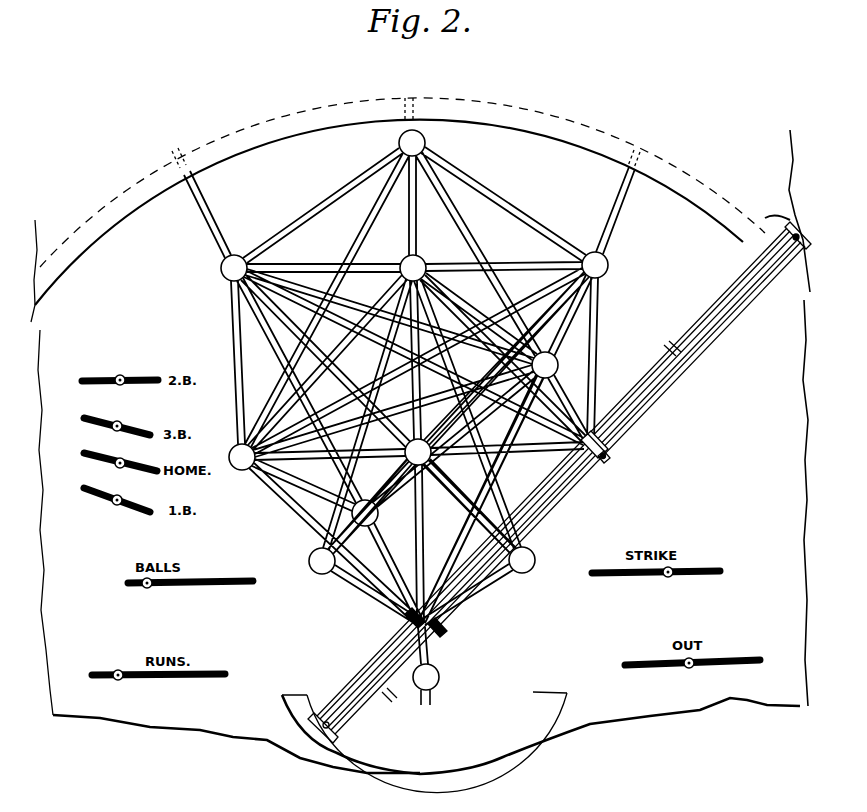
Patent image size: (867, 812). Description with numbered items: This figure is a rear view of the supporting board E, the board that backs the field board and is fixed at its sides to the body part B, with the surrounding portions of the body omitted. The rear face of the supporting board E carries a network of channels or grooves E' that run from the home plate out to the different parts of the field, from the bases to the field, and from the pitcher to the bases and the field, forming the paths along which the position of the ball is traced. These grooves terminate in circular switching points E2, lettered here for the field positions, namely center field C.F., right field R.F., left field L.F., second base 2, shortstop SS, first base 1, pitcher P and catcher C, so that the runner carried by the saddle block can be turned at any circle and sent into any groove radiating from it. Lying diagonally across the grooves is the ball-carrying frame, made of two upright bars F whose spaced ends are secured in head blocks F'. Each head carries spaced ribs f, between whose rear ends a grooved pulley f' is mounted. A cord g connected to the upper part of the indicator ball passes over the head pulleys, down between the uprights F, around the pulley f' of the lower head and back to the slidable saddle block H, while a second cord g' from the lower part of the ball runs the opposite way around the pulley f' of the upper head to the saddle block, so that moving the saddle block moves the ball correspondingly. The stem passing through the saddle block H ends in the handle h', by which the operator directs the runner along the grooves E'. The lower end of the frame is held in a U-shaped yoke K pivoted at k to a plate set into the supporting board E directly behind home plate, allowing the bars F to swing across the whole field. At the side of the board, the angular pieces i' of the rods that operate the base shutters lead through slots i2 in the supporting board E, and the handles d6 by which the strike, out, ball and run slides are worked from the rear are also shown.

The body part B is at (400, 312).
The supporting board E is at (431, 405).
The channels or grooves E' is at (441, 396).
The circular points E2 is at (250, 258).
The upright bars F is at (557, 497).
The head blocks F' is at (787, 217).
The ribs f is at (774, 246).
The grooved pulleys f' is at (324, 711).
The cord or wire g is at (719, 293).
The wire or cord g' is at (469, 604).
The slidable saddle block H is at (599, 463).
The handle h' is at (614, 464).
The yoke K is at (442, 633).
The pivot k is at (405, 624).
The angular pieces i' is at (120, 442).
The slots i2 is at (153, 374).
The handles d6 is at (140, 580).
The center field pocket C.F. is at (427, 143).
The right field pocket R.F. is at (218, 268).
The left field pocket L.F. is at (609, 265).
The second base pocket 2 is at (413, 268).
The shortstop pocket SS is at (545, 365).
The first base pocket 1 is at (242, 457).
The pitcher pocket P is at (418, 452).
The catcher pocket C is at (426, 684).